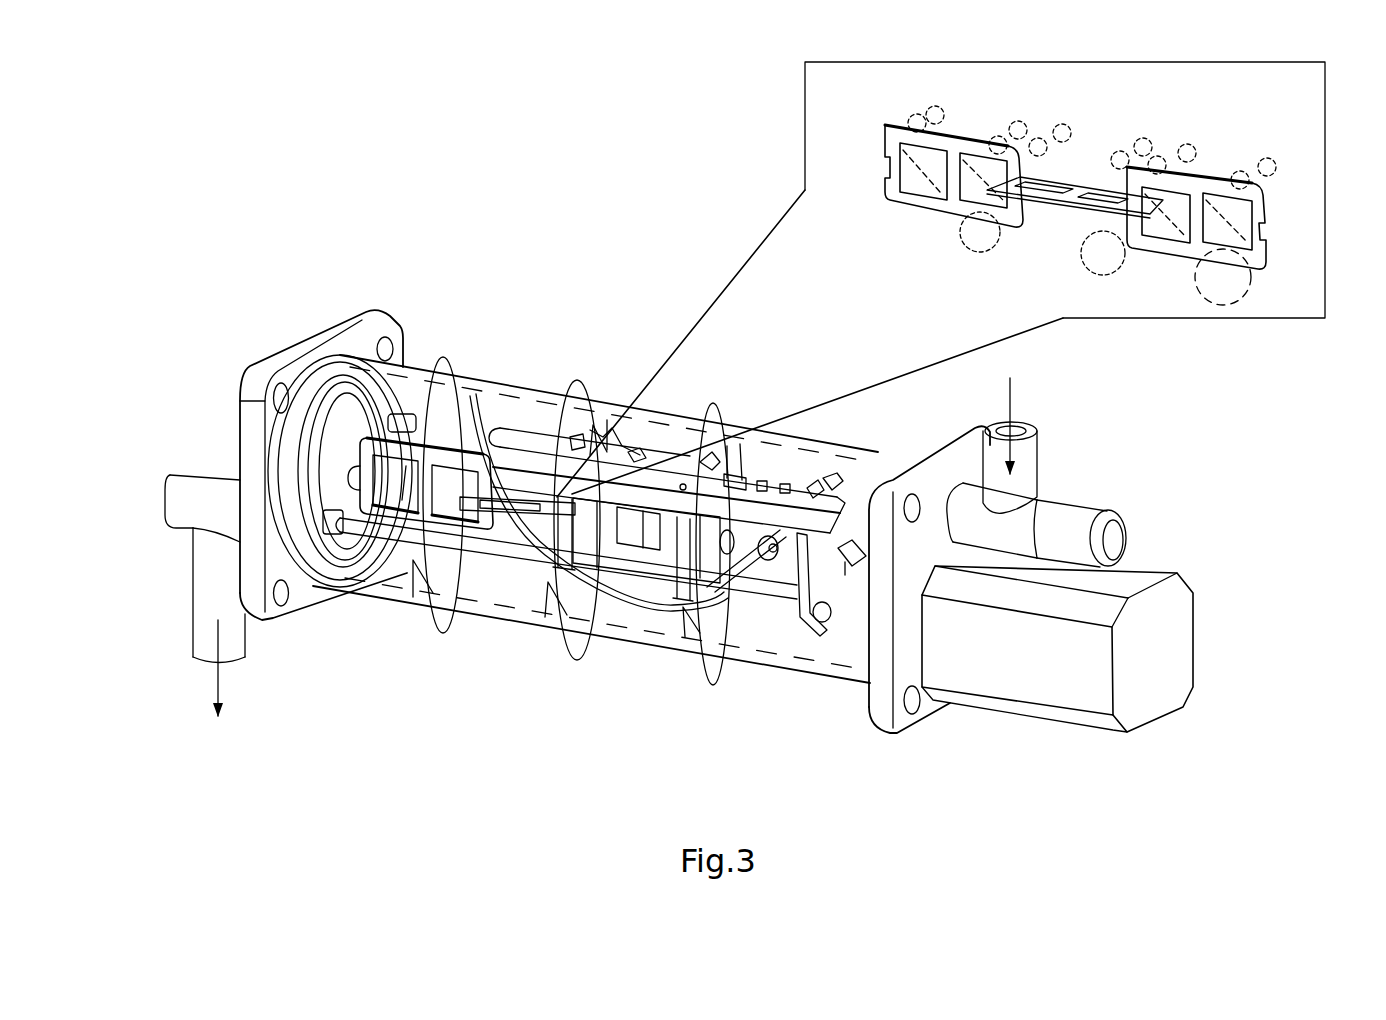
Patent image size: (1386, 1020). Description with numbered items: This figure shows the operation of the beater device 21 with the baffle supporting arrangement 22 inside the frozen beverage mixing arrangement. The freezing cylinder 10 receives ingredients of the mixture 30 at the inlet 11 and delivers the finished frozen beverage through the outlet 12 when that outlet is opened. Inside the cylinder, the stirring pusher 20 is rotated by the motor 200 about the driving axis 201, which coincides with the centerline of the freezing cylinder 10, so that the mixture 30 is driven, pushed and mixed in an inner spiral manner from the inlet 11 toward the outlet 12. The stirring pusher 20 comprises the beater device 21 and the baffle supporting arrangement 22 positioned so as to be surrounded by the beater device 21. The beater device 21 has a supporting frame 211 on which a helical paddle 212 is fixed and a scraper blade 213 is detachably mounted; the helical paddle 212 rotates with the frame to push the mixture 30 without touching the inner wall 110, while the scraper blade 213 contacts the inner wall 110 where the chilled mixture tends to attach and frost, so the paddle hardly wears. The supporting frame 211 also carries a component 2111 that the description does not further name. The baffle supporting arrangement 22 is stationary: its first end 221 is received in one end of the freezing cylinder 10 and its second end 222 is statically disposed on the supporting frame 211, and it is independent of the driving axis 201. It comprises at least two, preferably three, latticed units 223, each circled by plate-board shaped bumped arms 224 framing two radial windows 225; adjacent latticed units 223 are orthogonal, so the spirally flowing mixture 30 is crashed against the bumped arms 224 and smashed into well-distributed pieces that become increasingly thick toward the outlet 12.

The freezing cylinder 10 is at (559, 460).
The inlet 11 is at (1046, 472).
The outlet 12 is at (167, 595).
The stirring pusher 20 is at (571, 478).
The beater device 21 is at (411, 562).
The baffle supporting arrangement 22 is at (907, 488).
The mixture 30 is at (1027, 521).
The inner wall 110 is at (608, 488).
The motor 200 is at (1057, 686).
The driving axis 201 is at (933, 553).
The supporting frame 211 is at (667, 581).
The helical paddle 212 is at (560, 619).
The scraper blade 213 is at (599, 568).
The first end 221 is at (930, 179).
The second end 222 is at (1227, 206).
The latticed unit 223 is at (899, 196).
The bumped arm 224 is at (1049, 229).
The radial window 225 is at (1197, 173).
The screw 2111 is at (883, 484).